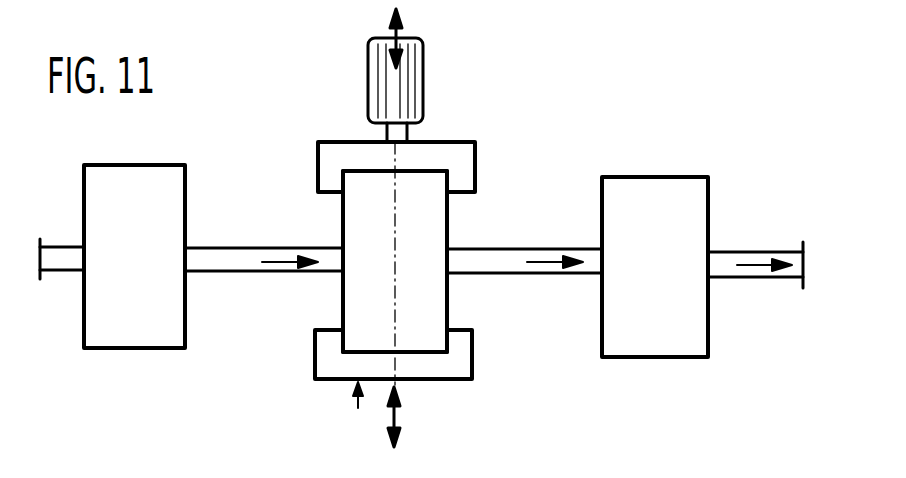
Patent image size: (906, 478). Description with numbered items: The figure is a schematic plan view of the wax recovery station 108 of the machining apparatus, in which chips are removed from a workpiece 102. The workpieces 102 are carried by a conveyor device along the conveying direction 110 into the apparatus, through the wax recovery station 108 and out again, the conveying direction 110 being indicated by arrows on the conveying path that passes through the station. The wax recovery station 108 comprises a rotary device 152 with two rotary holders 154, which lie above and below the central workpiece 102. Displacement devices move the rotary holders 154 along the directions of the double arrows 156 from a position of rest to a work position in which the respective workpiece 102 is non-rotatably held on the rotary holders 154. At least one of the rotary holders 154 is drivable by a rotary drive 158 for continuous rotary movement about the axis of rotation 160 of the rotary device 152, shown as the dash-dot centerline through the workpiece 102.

The workpiece 102 is at (135, 180).
The wax recovery station 108 is at (305, 116).
The conveying direction 110 is at (278, 262).
The rotary device 152 is at (358, 406).
The rotary holders 154 is at (442, 152).
The double arrows 156 is at (393, 33).
The rotary drive 158 is at (407, 97).
The axis of rotation 160 is at (395, 232).